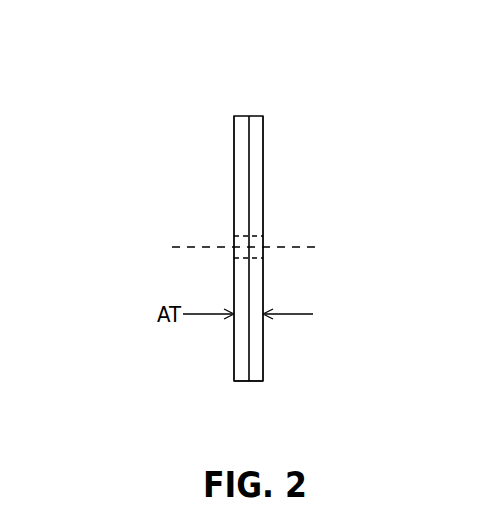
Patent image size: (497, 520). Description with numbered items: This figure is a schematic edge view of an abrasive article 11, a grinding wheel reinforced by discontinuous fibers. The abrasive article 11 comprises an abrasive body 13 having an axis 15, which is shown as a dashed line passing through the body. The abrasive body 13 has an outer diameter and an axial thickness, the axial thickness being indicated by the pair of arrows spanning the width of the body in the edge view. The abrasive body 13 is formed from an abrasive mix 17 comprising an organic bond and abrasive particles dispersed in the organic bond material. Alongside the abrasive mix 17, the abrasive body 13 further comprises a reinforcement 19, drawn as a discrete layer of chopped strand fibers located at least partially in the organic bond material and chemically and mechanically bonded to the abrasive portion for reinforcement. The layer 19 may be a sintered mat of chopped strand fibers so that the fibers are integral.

The abrasive article 11 is at (131, 83).
The abrasive body 13 is at (263, 390).
The axis 15 is at (320, 247).
The abrasive mix 17 is at (263, 116).
The reinforcement 19 is at (234, 116).